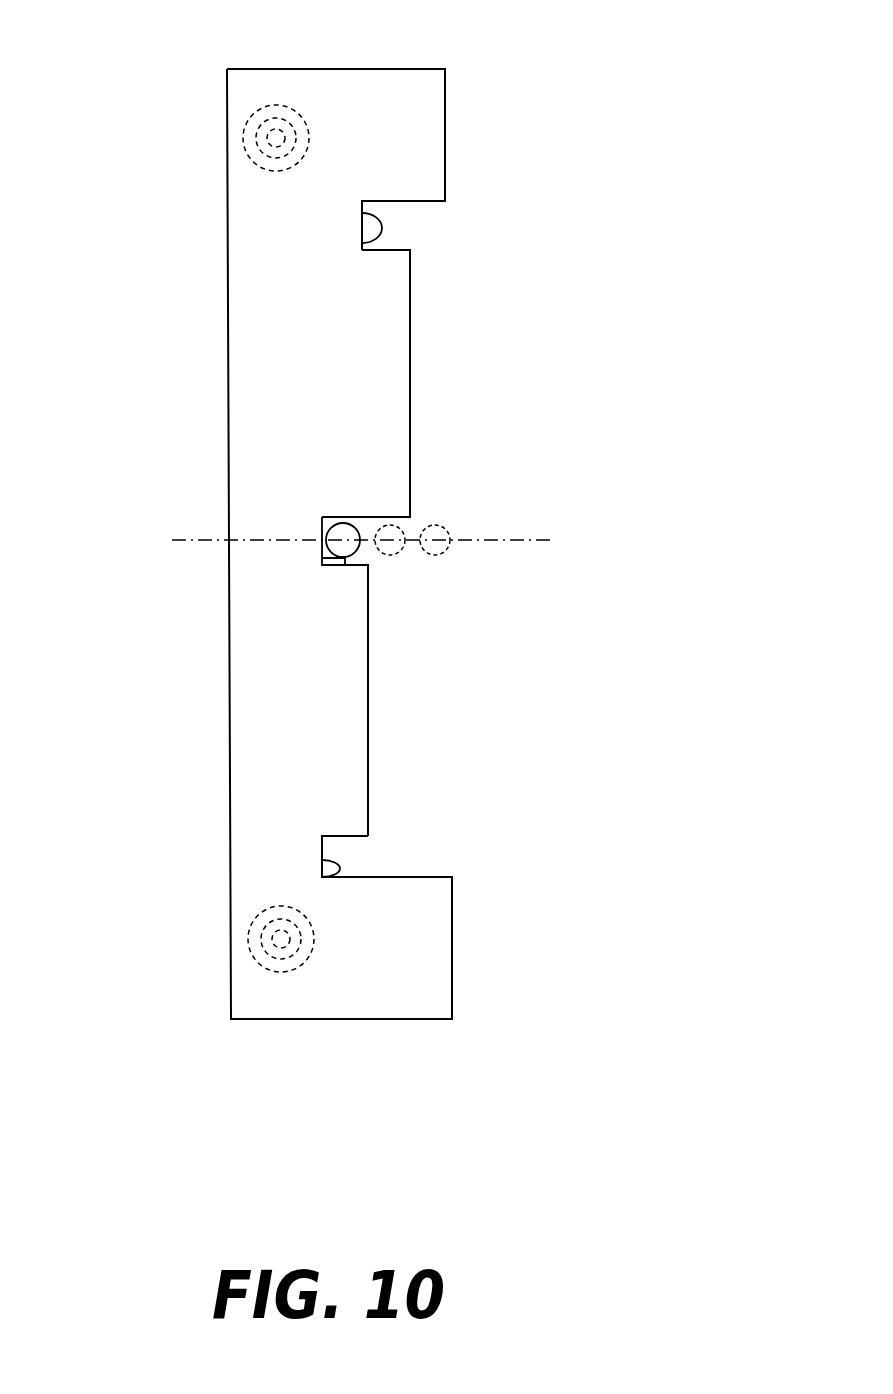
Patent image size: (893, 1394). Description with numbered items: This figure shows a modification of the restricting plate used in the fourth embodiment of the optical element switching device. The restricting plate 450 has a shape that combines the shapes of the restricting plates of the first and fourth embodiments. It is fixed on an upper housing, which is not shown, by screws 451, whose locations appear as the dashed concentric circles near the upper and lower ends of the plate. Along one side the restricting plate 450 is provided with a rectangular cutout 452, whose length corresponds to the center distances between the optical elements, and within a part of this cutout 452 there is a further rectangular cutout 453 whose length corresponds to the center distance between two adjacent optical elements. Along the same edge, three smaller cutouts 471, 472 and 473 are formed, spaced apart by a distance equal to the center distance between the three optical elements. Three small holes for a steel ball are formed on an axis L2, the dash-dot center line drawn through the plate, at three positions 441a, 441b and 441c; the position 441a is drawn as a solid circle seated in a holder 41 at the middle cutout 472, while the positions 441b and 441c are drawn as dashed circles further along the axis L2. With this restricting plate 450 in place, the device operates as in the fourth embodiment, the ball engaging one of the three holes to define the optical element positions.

The bearing holder 41 is at (322, 528).
The position 441a is at (343, 523).
The position 441b is at (393, 556).
The position 441c is at (450, 527).
The restricting plate 450 is at (262, 768).
The screws 451 is at (300, 118).
The rectangular cutout 452 is at (410, 292).
The rectangular cutout 453 is at (370, 762).
The cutout 471 is at (338, 870).
The cutout 472 is at (327, 566).
The cutout 473 is at (366, 241).
The axis L2 is at (528, 538).